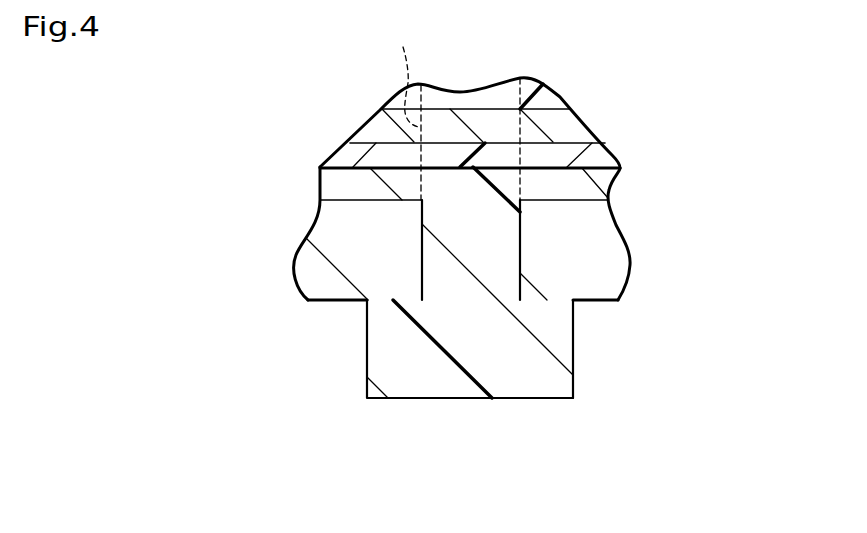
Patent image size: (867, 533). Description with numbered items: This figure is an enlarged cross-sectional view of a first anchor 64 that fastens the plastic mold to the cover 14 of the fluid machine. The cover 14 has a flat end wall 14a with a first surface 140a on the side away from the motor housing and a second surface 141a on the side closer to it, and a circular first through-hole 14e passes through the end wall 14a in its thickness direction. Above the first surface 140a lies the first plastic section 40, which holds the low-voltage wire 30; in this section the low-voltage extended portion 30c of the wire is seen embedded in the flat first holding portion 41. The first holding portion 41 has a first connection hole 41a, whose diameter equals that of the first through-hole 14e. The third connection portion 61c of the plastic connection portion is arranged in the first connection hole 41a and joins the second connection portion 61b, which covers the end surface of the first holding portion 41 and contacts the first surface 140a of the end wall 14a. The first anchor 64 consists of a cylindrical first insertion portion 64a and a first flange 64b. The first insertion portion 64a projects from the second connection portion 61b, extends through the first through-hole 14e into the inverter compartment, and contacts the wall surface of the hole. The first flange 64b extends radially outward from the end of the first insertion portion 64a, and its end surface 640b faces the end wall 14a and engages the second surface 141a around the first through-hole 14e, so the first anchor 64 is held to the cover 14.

The cover 14 is at (327, 222).
The end wall 14a is at (600, 221).
The first through-hole 14e is at (418, 271).
The first surface 140a is at (343, 200).
The second surface 141a is at (335, 302).
The low-voltage wire 30 is at (572, 125).
The low-voltage extended portion 30c is at (550, 117).
The first plastic section 40 is at (507, 87).
The first holding portion 41 is at (443, 98).
The first connection hole 41a is at (511, 160).
The second connection portion 61b is at (363, 188).
The third connection portion 61c is at (402, 77).
The first anchor 64 is at (535, 387).
The first insertion portion 64a is at (490, 257).
The first flange 64b is at (560, 345).
The end surface 640b is at (557, 300).